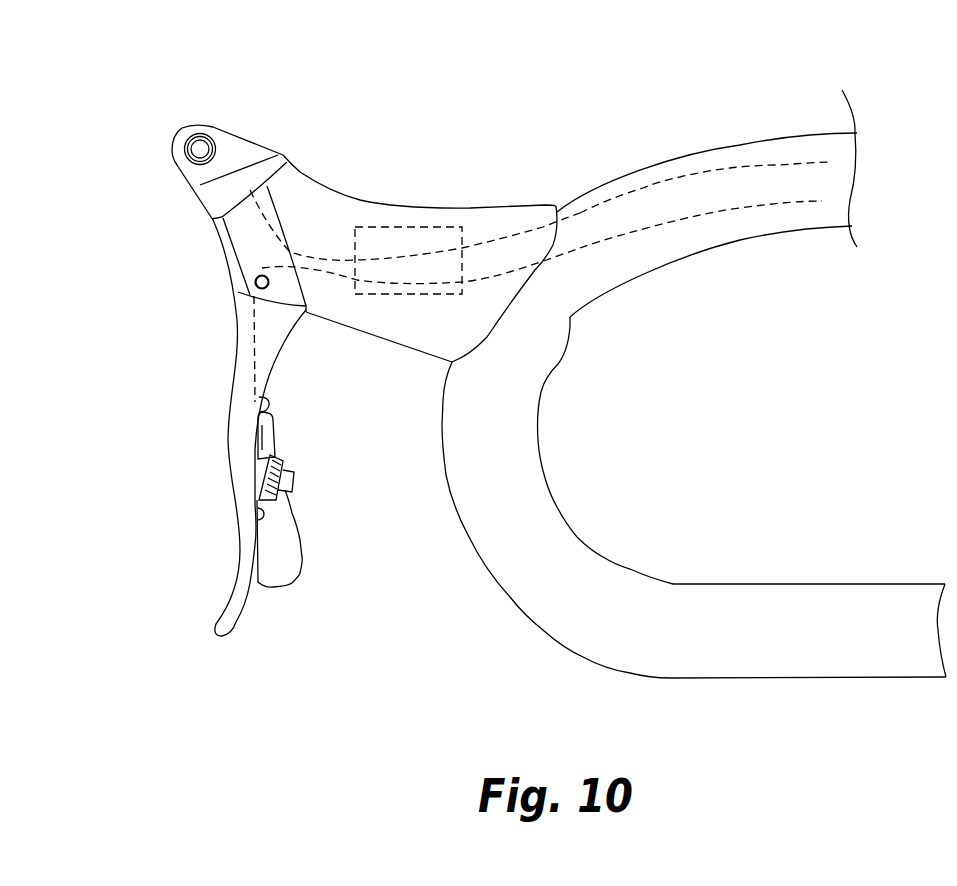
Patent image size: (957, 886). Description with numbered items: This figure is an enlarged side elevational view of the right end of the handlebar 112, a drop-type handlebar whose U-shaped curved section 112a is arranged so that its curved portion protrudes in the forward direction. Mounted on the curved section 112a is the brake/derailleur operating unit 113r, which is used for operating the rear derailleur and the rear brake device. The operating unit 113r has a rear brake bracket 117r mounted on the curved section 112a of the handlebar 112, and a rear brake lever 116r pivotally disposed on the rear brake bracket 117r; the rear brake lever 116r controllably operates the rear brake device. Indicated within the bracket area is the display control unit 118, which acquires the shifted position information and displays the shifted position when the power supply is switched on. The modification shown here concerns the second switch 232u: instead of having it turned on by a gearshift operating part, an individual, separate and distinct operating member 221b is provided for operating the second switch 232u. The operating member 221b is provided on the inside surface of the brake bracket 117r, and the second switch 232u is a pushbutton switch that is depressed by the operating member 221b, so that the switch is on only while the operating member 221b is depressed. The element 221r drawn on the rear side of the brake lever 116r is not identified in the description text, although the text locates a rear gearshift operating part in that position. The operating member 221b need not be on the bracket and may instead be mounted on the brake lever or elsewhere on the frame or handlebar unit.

The handlebar 112 is at (644, 162).
The curved section 112a is at (453, 427).
The brake/derailleur operating unit 113r is at (393, 200).
The rear brake lever 116r is at (232, 378).
The rear brake bracket 117r is at (475, 213).
The display control unit 118 is at (422, 226).
The operating member 221b is at (186, 128).
The shift lever 221r is at (289, 508).
The second switch 232u is at (205, 127).